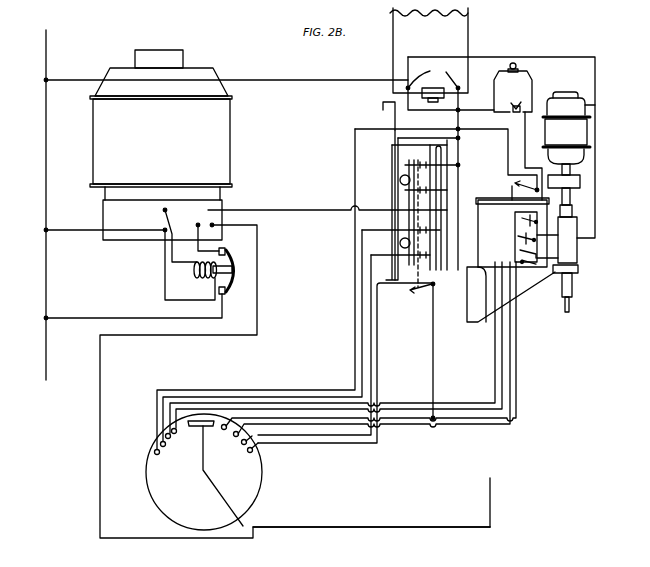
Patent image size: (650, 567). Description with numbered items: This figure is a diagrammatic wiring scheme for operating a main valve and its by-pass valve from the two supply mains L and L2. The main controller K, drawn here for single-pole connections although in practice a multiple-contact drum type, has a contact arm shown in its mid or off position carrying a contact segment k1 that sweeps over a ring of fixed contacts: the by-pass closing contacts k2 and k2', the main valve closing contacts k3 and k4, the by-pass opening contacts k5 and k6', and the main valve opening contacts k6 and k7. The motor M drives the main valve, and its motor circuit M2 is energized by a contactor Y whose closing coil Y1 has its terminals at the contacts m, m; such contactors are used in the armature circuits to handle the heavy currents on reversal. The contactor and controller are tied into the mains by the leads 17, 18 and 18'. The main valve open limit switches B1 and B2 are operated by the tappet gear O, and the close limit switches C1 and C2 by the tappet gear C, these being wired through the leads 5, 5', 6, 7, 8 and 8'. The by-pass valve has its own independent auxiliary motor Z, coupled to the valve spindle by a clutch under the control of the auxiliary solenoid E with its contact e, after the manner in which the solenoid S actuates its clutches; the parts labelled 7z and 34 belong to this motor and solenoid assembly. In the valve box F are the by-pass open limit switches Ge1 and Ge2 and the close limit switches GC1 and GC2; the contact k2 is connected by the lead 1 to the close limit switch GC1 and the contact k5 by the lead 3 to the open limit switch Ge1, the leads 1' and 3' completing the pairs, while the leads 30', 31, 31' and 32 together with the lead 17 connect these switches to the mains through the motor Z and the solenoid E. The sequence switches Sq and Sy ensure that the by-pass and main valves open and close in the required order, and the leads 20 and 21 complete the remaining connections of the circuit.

The supply main L is at (46, 184).
The motor M is at (161, 145).
The lead 17 is at (226, 86).
The conductor 18 is at (327, 202).
The conductor 18' is at (104, 238).
The contact m is at (164, 213).
The motor circuit M2 is at (214, 226).
The contactor Y is at (233, 262).
The closing coil Y1 is at (197, 277).
The solenoid S is at (460, 44).
The lead 31 is at (475, 179).
The conductor 31' is at (501, 139).
The auxiliary solenoid E is at (513, 87).
The contact e is at (514, 101).
The conductor 8 is at (276, 275).
The conductor 8' is at (446, 159).
The sequence switch Sq is at (511, 189).
The tappet gear O is at (400, 181).
The main valve open limit switch B1 is at (432, 159).
The main valve open limit switch B2 is at (426, 198).
The conductor 21 is at (458, 170).
The tappet gear C is at (400, 244).
The main valve close limit switch C1 is at (401, 223).
The main valve close limit switch C2 is at (400, 262).
The conductor 7 is at (362, 356).
The conductor 5 is at (325, 362).
The conductor 6 is at (377, 356).
The conductor 5' is at (419, 351).
The sequence switch Sy is at (422, 294).
The valve box F is at (478, 218).
The by-pass valve open limit switch Ge1 is at (522, 219).
The by-pass valve open limit switch Ge2 is at (518, 237).
The by-pass valve close limit switch GC1 is at (577, 249).
The by-pass valve close limit switch GC2 is at (521, 268).
The auxiliary motor Z is at (566, 133).
The lead 32 is at (546, 135).
The lead 7z is at (574, 100).
The plunger block 34 is at (574, 188).
The lead 30' is at (601, 146).
The conductor 3' is at (332, 347).
The lead 3 is at (339, 345).
The conductor 1' is at (382, 357).
The lead 1 is at (387, 357).
The main controller K is at (258, 491).
The contact segment k1 is at (203, 421).
The by-pass closing contact k2 is at (220, 437).
The by-pass closing contact k2' is at (234, 446).
The main valve closing contact k3 is at (245, 445).
The main valve closing contact k4 is at (253, 451).
The by-pass opening contact k5 is at (176, 433).
The main valve opening contact k6 is at (150, 441).
The by-pass opening contact k6' is at (183, 447).
The main valve opening contact k7 is at (154, 453).
The conductor 20 is at (408, 527).
The supply main L2 is at (490, 497).